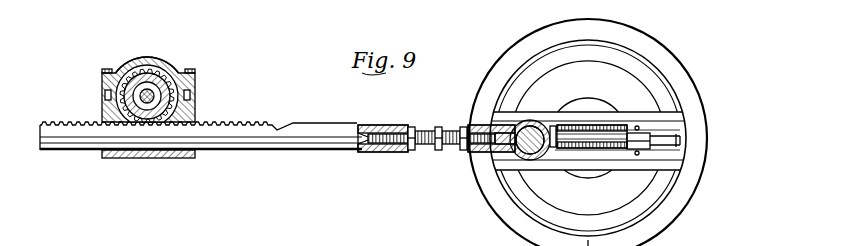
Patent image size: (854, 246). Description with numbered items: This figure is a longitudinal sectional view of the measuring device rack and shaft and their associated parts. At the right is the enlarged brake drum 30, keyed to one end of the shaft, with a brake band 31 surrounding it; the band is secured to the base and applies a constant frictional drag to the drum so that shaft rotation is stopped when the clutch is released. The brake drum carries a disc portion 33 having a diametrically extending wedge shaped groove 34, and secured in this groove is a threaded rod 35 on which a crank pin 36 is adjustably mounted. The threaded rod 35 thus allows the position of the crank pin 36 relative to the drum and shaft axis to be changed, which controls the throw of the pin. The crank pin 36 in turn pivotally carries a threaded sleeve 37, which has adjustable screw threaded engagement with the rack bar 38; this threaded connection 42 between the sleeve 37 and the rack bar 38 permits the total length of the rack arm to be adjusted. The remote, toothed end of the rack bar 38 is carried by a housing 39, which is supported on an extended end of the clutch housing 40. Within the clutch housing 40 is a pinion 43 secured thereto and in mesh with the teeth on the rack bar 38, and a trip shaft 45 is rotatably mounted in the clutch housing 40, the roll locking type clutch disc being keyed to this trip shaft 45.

The brake drum 30 is at (660, 197).
The brake band 31 is at (667, 222).
The disc portion 33 is at (675, 167).
The wedge shaped groove 34 is at (682, 135).
The threaded rod 35 is at (510, 125).
The crank pin 36 is at (487, 153).
The threaded sleeve 37 is at (427, 142).
The rack bar 38 is at (277, 135).
The housing 39 is at (110, 158).
The clutch housing 40 is at (163, 78).
The threaded connection 42 is at (387, 126).
The pinion 43 is at (160, 62).
The trip shaft 45 is at (193, 82).